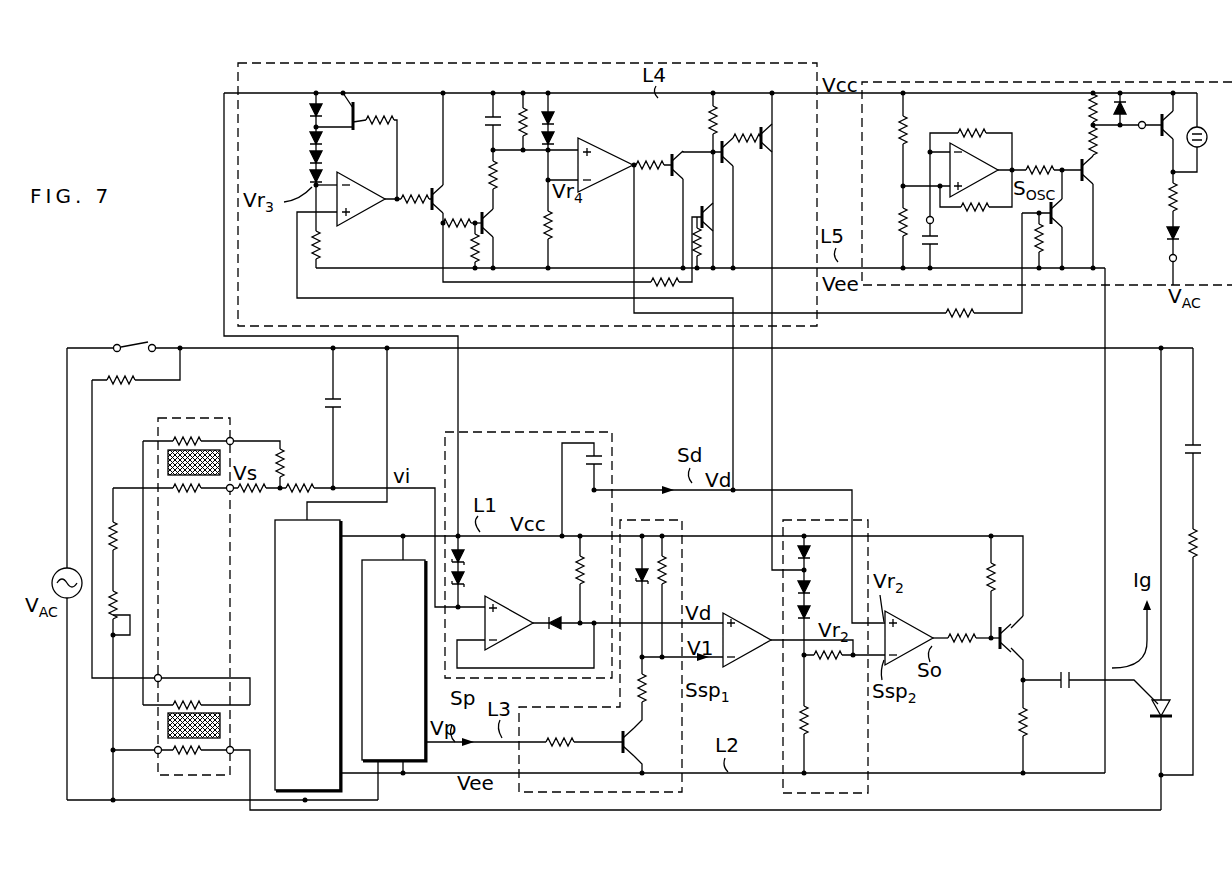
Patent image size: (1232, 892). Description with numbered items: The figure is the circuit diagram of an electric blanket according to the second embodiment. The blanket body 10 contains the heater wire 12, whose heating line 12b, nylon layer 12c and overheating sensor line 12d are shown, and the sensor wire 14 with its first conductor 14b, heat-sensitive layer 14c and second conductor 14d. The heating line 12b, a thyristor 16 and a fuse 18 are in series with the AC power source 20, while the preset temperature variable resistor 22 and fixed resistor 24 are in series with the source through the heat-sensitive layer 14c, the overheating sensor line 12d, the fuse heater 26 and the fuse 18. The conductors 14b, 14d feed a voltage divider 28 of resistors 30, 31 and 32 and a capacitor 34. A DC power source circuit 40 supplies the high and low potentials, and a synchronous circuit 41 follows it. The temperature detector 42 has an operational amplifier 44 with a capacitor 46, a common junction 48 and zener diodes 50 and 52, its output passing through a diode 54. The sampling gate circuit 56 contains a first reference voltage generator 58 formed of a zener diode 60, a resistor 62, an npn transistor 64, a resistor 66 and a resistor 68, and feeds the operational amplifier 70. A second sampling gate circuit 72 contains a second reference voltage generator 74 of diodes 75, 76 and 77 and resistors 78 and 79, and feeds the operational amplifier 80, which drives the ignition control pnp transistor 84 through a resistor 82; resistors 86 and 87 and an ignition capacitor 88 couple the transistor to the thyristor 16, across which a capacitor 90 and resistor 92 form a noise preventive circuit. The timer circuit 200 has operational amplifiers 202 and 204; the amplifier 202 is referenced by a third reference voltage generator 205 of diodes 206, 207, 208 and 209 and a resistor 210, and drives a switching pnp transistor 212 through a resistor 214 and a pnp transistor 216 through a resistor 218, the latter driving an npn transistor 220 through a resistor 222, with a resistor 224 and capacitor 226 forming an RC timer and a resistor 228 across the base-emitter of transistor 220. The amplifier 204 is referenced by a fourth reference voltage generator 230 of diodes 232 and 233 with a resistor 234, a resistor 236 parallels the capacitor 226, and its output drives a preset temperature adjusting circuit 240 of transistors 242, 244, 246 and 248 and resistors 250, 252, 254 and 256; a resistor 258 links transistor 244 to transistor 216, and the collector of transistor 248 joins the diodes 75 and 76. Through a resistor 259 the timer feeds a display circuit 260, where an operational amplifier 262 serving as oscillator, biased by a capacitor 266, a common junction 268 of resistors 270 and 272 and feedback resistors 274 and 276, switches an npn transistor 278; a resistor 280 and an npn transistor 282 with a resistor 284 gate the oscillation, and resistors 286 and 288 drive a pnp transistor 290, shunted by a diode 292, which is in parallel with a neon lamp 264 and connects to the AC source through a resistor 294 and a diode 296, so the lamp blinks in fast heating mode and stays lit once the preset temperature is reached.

The blanket body 10 is at (233, 592).
The heater wire 12 is at (193, 721).
The heating line 12b is at (208, 750).
The nylon layer 12c is at (168, 727).
The overheating sensor line 12d is at (188, 698).
The sensor wire 14 is at (177, 453).
The first conductor 14b is at (189, 494).
The heat-sensitive layer 14c is at (168, 462).
The second conductor 14d is at (200, 436).
The thyristor 16 is at (1137, 718).
The fuse 18 is at (134, 343).
The AC power source 20 is at (58, 570).
The preset temperature variable resistor 22 is at (116, 596).
The fixed resistor 24 is at (116, 526).
The fuse heater 26 is at (120, 386).
The voltage divider 28 is at (283, 431).
The resistor 30 is at (254, 494).
The resistor 31 is at (285, 456).
The resistor 32 is at (300, 483).
The capacitor 34 is at (328, 395).
The DC power source circuit 40 is at (275, 598).
The synchronous circuit 41 is at (416, 762).
The temperature detector 42 is at (528, 430).
The operational amplifier 44 is at (514, 645).
The capacitor 46 is at (606, 460).
The common junction 48 is at (336, 483).
The zener diode 50 is at (468, 560).
The zener diode 52 is at (468, 583).
The diode 54 is at (560, 634).
The sampling gate circuit 56 is at (572, 574).
The first reference voltage generator 58 is at (672, 591).
The zener diode 60 is at (634, 578).
The resistor 62 is at (648, 684).
The npn transistor 64 is at (633, 742).
The resistor 66 is at (566, 760).
The resistor 68 is at (674, 568).
The operational amplifier 70 is at (752, 655).
The sampling gate circuit 72 is at (853, 522).
The second reference voltage generator 74 is at (799, 595).
The diode 75 is at (812, 556).
The diode 76 is at (812, 590).
The diode 77 is at (812, 614).
The resistor 78 is at (814, 724).
The resistor 79 is at (828, 664).
The operational amplifier 80 is at (916, 626).
The resistor 82 is at (964, 648).
The ignition control pnp transistor 84 is at (1012, 632).
The resistor 86 is at (1018, 726).
The resistor 87 is at (987, 570).
The ignition capacitor 88 is at (1066, 690).
The capacitor 90 is at (1178, 447).
The resistor 92 is at (1205, 547).
The timer circuit 200 is at (238, 78).
The operational amplifier 202 is at (364, 186).
The operational amplifier 204 is at (606, 182).
The third reference voltage generator 205 is at (306, 128).
The diode 206 is at (310, 112).
The diode 207 is at (310, 140).
The diode 208 is at (310, 159).
The diode 209 is at (310, 178).
The resistor 210 is at (322, 246).
The switching pnp transistor 212 is at (354, 102).
The resistor 214 is at (368, 118).
The pnp transistor 216 is at (436, 192).
The resistor 218 is at (415, 193).
The npn transistor 220 is at (493, 236).
The resistor 222 is at (445, 222).
The resistor 224 is at (518, 130).
The capacitor 226 is at (490, 110).
The resistor 228 is at (470, 245).
The fourth reference voltage generator 230 is at (579, 105).
The diode 232 is at (560, 117).
The diode 233 is at (560, 139).
The resistor 234 is at (572, 237).
The resistor 236 is at (515, 179).
The preset temperature adjusting circuit 240 is at (712, 102).
The transistor 242 is at (670, 157).
The transistor 244 is at (716, 216).
The transistor 246 is at (735, 160).
The transistor 248 is at (774, 142).
The resistor 250 is at (650, 172).
The resistor 252 is at (694, 236).
The resistor 254 is at (708, 124).
The resistor 256 is at (747, 134).
The resistor 258 is at (660, 278).
The resistor 259 is at (968, 320).
The display circuit 260 is at (1118, 290).
The operational amplifier 262 is at (945, 135).
The neon lamp 264 is at (1208, 150).
The capacitor 266 is at (938, 242).
The common junction 268 is at (900, 188).
The resistor 270 is at (899, 142).
The resistor 272 is at (900, 238).
The resistor 274 is at (966, 130).
The resistor 276 is at (973, 212).
The npn transistor 278 is at (1093, 186).
The resistor 280 is at (1040, 164).
The npn transistor 282 is at (1063, 222).
The resistor 284 is at (1034, 238).
The resistor 286 is at (1099, 146).
The resistor 288 is at (1088, 108).
The pnp transistor 290 is at (1162, 142).
The diode 292 is at (1124, 102).
The resistor 294 is at (1177, 200).
The diode 296 is at (1177, 236).